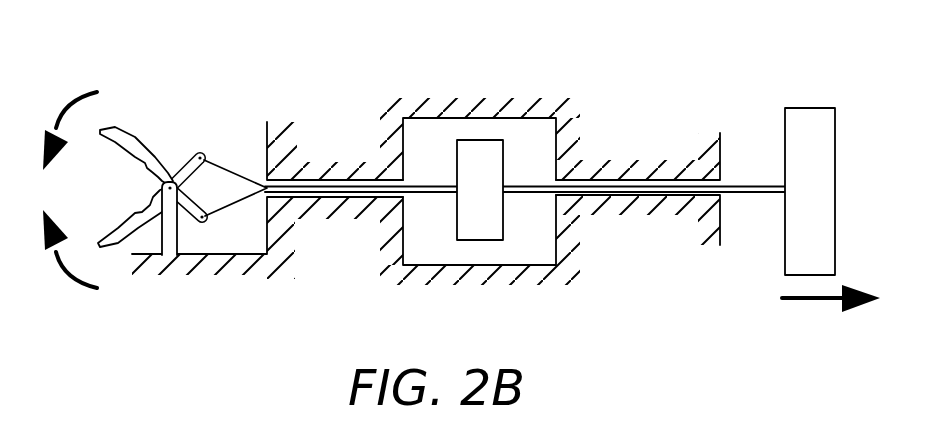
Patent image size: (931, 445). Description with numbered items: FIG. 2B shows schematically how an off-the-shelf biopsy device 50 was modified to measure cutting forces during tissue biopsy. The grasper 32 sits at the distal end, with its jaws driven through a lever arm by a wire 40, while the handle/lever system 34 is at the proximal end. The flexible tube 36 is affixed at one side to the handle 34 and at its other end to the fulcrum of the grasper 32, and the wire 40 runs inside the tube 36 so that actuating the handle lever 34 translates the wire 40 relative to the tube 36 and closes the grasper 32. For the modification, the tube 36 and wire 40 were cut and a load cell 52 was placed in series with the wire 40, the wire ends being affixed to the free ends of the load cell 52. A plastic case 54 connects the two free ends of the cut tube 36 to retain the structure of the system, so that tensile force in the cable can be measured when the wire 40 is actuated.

The grasper 32 is at (122, 142).
The wire 40 is at (220, 167).
The flexible tube 36 is at (317, 152).
The load cell 52 is at (464, 202).
The plastic case 54 is at (533, 145).
The handle/lever system 34 is at (809, 125).
The biopsy device 50 is at (648, 62).